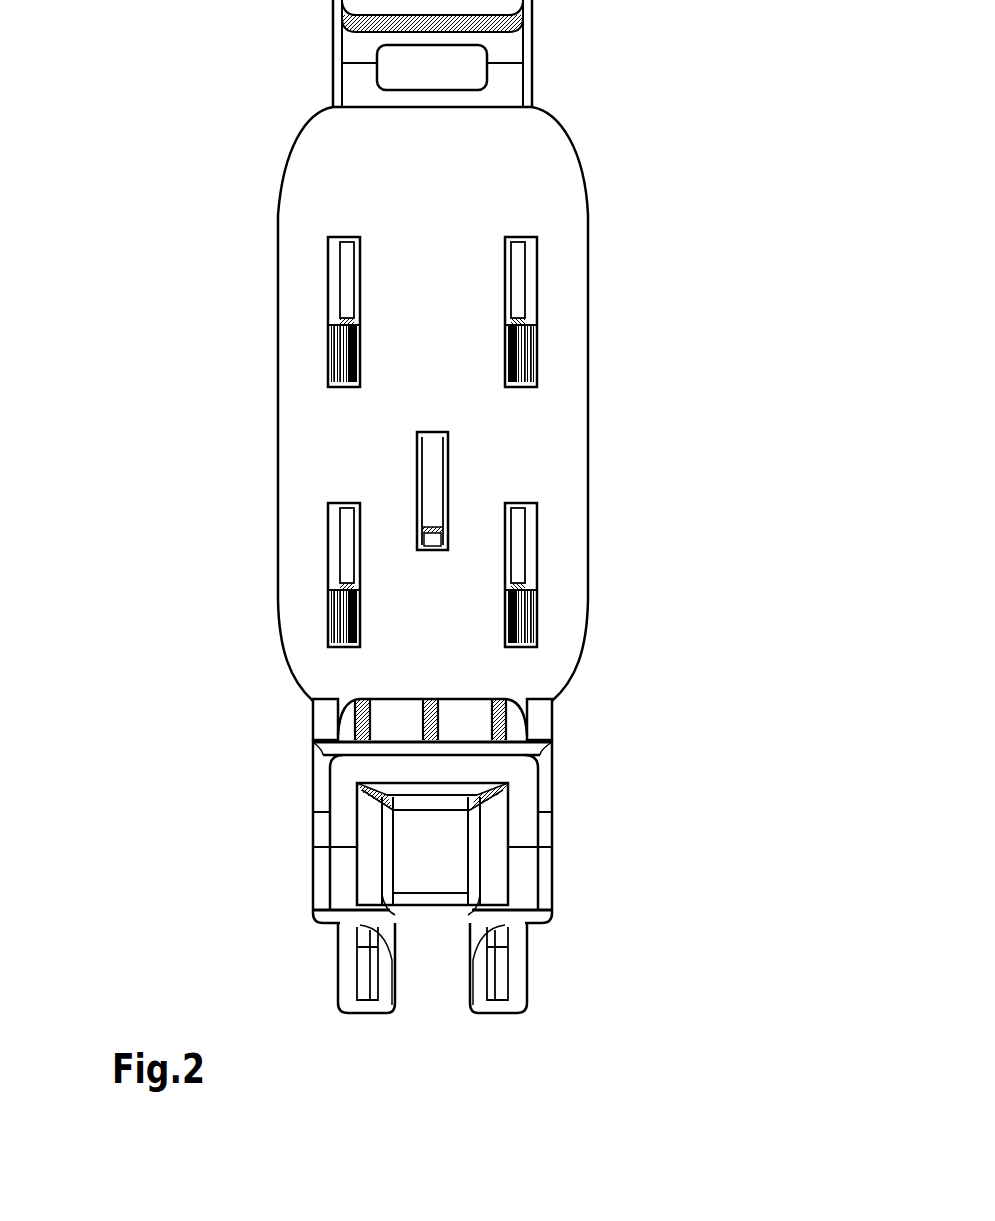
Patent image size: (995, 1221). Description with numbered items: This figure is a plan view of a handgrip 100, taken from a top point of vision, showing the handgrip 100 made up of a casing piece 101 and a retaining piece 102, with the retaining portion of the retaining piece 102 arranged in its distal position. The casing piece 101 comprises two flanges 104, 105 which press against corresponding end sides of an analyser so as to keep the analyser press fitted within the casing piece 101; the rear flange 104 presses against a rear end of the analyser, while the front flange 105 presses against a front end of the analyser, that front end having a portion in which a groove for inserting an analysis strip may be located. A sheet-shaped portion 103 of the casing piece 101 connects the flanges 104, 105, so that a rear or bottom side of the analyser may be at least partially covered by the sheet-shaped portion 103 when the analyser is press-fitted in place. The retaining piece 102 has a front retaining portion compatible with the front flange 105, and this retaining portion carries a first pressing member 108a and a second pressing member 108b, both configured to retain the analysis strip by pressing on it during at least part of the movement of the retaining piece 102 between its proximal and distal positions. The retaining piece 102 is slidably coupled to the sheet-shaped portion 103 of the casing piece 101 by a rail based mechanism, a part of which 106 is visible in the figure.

The handgrip 100 is at (180, 90).
The casing piece 101 is at (610, 381).
The retaining piece 102 is at (543, 982).
The sheet-shaped portion 103 is at (313, 463).
The flange 104 is at (505, 46).
The flange 105 is at (522, 787).
The rail based mechanism 106 is at (365, 722).
The first pressing member 108a is at (387, 1012).
The second pressing member 108b is at (483, 1010).